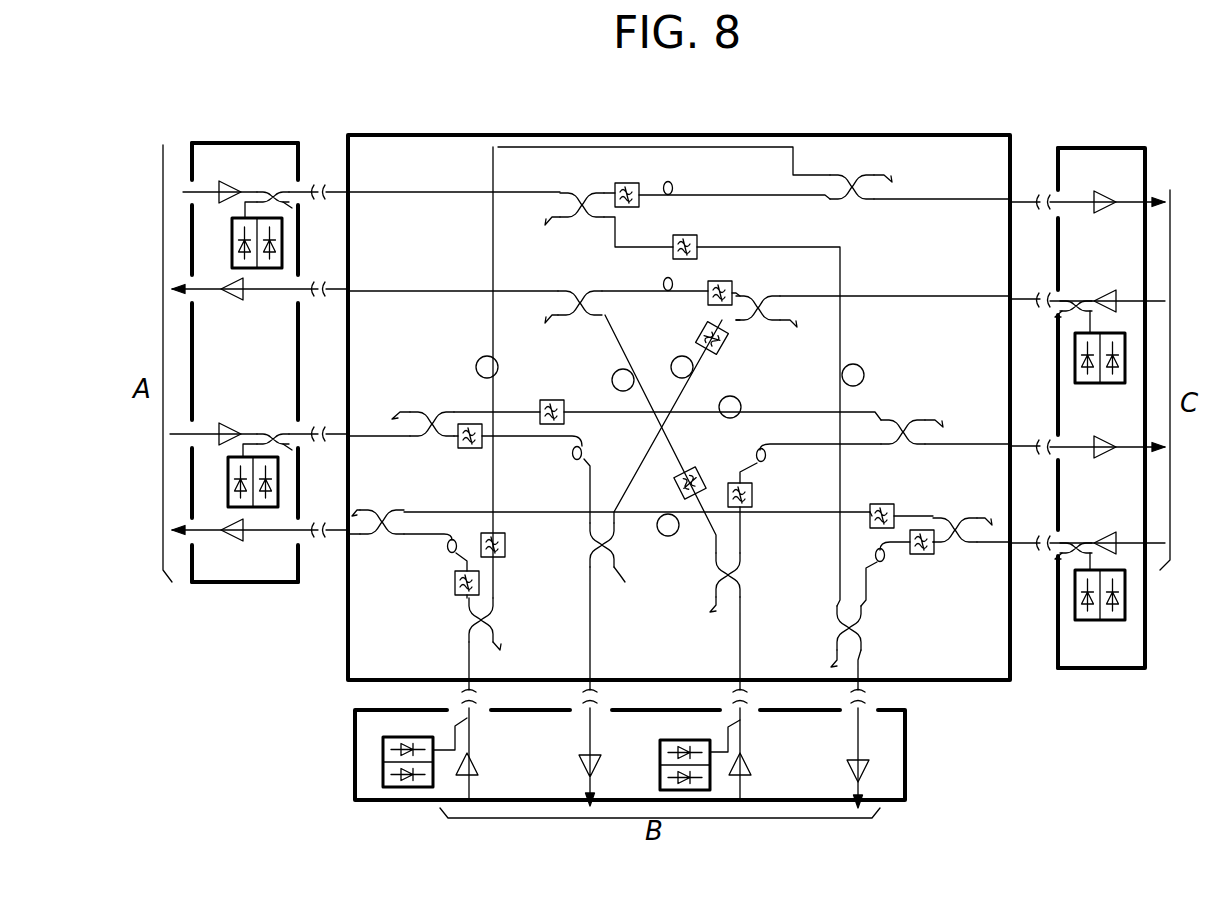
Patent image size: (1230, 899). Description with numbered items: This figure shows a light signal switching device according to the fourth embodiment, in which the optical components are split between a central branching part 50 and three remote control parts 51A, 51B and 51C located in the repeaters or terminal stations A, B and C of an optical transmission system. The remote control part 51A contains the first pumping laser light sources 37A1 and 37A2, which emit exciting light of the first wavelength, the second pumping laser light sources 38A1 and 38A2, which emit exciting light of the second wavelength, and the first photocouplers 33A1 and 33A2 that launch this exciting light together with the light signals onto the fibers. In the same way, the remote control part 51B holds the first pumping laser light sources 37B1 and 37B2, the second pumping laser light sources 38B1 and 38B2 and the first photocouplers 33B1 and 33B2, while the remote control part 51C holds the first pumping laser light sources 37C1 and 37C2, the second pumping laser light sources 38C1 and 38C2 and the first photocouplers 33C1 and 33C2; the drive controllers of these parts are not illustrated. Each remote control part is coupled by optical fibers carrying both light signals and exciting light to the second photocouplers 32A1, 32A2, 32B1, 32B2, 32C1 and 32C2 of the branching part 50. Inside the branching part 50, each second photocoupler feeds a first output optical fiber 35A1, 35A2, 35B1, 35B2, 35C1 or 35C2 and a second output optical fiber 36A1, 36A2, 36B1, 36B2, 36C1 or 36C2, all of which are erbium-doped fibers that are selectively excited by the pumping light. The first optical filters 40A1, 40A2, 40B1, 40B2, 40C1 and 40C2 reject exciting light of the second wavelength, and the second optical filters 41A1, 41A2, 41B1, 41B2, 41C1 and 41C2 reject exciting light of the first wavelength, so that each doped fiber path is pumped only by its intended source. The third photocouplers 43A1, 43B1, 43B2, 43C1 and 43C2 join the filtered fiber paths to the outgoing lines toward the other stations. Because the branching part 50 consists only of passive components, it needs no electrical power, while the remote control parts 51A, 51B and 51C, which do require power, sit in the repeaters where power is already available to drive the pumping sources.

The branching part 50 is at (679, 391).
The remote control part 51A is at (245, 347).
The remote control part 51B is at (660, 755).
The remote control part 51C is at (1101, 424).
The first photocoupler 33A1 is at (265, 182).
The first photocoupler 33A2 is at (259, 421).
The first photocoupler 33B1 is at (500, 749).
The first photocoupler 33B2 is at (774, 751).
The first photocoupler 33C1 is at (1084, 300).
The first photocoupler 33C2 is at (1082, 542).
The first pumping laser light source 37A1 is at (232, 240).
The first pumping laser light source 37A2 is at (228, 482).
The first pumping laser light source 37B1 is at (418, 750).
The first pumping laser light source 37B2 is at (688, 752).
The first pumping laser light source 37C1 is at (1103, 383).
The first pumping laser light source 37C2 is at (1101, 620).
The second pumping laser light source 38A1 is at (268, 268).
The second pumping laser light source 38A2 is at (264, 508).
The second pumping laser light source 38B1 is at (383, 773).
The second pumping laser light source 38B2 is at (628, 773).
The second pumping laser light source 38C1 is at (1075, 358).
The second pumping laser light source 38C2 is at (1075, 605).
The second photocoupler 32A1 is at (476, 197).
The second photocoupler 32A2 is at (409, 409).
The second photocoupler 32B1 is at (518, 699).
The second photocoupler 32B2 is at (763, 676).
The second photocoupler 32C1 is at (762, 294).
The second photocoupler 32C2 is at (953, 520).
The first optical filter 40A1 is at (643, 178).
The first optical filter 40A2 is at (448, 451).
The first optical filter 40B1 is at (455, 595).
The first optical filter 40B2 is at (778, 513).
The first optical filter 40C1 is at (712, 279).
The first optical filter 40C2 is at (925, 555).
The second optical filter 41A1 is at (659, 233).
The second optical filter 41A2 is at (667, 398).
The second optical filter 41B1 is at (505, 549).
The second optical filter 41B2 is at (682, 434).
The second optical filter 41C1 is at (705, 421).
The second optical filter 41C2 is at (891, 503).
The first output optical fiber 35A1 is at (734, 184).
The first output optical fiber 35A2 is at (536, 479).
The first output optical fiber 35B1 is at (445, 550).
The first output optical fiber 35B2 is at (789, 450).
The first output optical fiber 35C1 is at (655, 303).
The first output optical fiber 35C2 is at (868, 580).
The second output optical fiber 36A1 is at (768, 412).
The second output optical fiber 36A2 is at (791, 393).
The second output optical fiber 36B1 is at (486, 342).
The second output optical fiber 36B2 is at (614, 370).
The second output optical fiber 36C1 is at (690, 376).
The second output optical fiber 36C2 is at (676, 533).
The third photocoupler 43A1 is at (632, 580).
The third photocoupler 43B1 is at (392, 503).
The third photocoupler 43B2 is at (1015, 426).
The third photocoupler 43C1 is at (475, 291).
The third photocoupler 43C2 is at (864, 632).